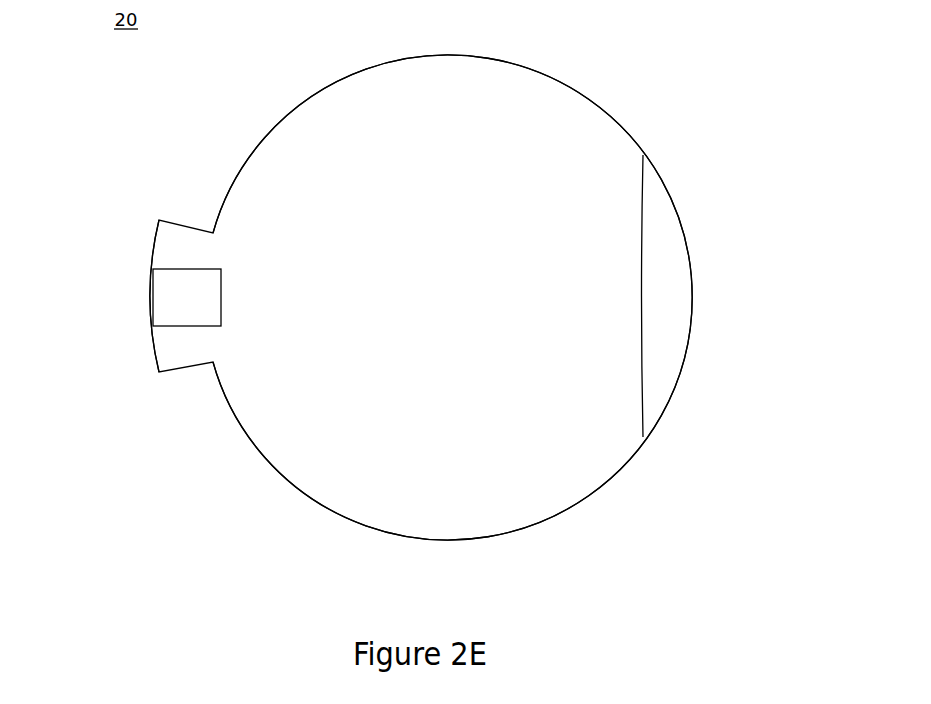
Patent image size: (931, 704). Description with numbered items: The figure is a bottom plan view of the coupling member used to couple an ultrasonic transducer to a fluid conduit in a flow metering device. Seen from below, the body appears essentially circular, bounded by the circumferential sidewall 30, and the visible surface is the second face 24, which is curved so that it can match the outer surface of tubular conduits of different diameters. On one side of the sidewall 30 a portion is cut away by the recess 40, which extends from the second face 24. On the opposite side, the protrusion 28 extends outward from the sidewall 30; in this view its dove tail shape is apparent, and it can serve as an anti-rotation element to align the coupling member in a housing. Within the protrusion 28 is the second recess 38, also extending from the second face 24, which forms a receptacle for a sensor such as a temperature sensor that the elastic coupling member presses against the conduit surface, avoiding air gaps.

The circumferential sidewall 30 is at (571, 88).
The second face 24 is at (495, 472).
The recess 40 is at (660, 285).
The second recess 38 is at (173, 298).
The protrusion 28 is at (179, 347).